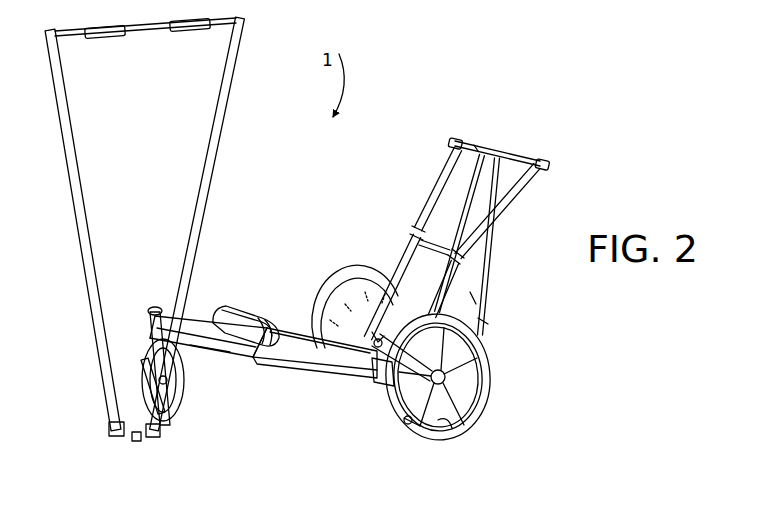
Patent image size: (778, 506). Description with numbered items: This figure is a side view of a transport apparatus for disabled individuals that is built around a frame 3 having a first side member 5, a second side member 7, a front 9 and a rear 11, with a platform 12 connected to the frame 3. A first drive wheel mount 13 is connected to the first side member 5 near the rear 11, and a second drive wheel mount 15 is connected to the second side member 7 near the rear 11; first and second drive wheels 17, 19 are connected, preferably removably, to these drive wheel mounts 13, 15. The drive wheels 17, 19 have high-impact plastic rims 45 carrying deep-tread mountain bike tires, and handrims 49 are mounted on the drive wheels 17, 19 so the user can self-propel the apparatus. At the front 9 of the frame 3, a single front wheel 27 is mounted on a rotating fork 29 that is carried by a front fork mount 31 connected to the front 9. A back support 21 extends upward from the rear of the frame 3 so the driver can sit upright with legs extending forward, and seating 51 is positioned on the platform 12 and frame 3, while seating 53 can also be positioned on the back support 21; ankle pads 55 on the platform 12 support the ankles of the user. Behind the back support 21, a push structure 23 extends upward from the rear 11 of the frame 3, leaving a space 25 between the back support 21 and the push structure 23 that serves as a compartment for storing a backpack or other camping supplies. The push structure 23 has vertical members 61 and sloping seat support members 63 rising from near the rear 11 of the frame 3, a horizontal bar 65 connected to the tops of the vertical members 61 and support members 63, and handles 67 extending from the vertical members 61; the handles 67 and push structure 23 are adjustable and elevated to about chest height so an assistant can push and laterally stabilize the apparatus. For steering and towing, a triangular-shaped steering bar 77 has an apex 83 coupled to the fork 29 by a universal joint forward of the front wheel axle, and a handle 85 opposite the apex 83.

The frame 3 is at (228, 366).
The first side member 5 is at (280, 332).
The second side member 7 is at (196, 322).
The front 9 is at (196, 347).
The rear 11 is at (412, 428).
The platform 12 is at (322, 368).
The first drive wheel mount 13 is at (466, 386).
The second drive wheel mount 15 is at (373, 317).
The first drive wheel 17 is at (492, 378).
The second drive wheel 19 is at (334, 300).
The back support 21 is at (481, 323).
The push structure 23 is at (519, 150).
The space 25 is at (472, 298).
The front wheel 27 is at (185, 394).
The fork 29 is at (150, 358).
The front fork mount 31 is at (152, 316).
The rims 45 is at (447, 428).
The handrims 49 is at (402, 422).
The seating 51 is at (290, 352).
The seating 53 is at (378, 375).
The ankle pads 55 is at (233, 305).
The vertical members 61 is at (488, 135).
The sloping seat support members 63 is at (446, 160).
The horizontal bar 65 is at (478, 143).
The handles 67 is at (547, 163).
The steering bar 77 is at (82, 273).
The apex 83 is at (142, 441).
The handle 85 is at (135, 30).